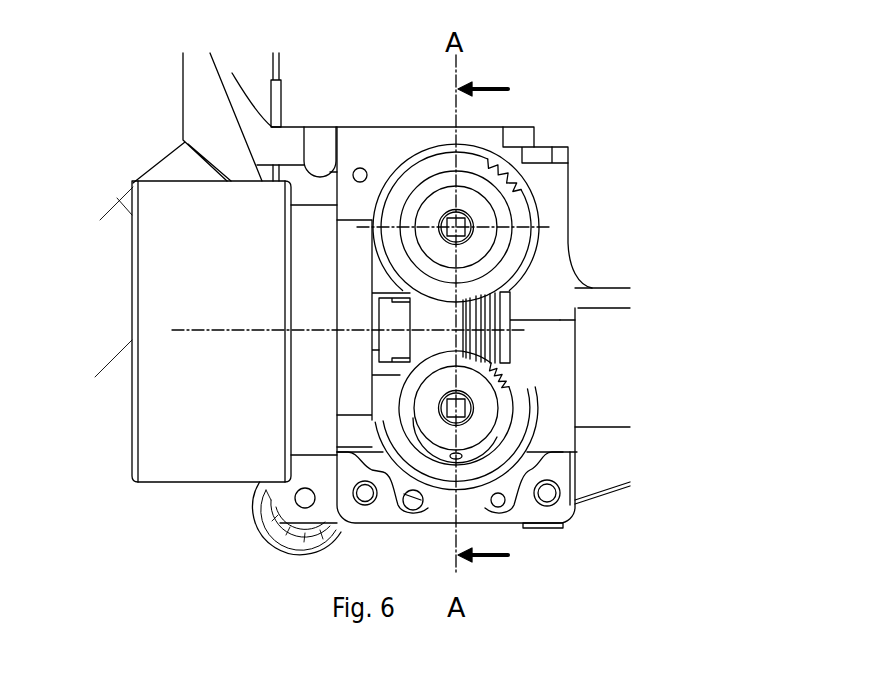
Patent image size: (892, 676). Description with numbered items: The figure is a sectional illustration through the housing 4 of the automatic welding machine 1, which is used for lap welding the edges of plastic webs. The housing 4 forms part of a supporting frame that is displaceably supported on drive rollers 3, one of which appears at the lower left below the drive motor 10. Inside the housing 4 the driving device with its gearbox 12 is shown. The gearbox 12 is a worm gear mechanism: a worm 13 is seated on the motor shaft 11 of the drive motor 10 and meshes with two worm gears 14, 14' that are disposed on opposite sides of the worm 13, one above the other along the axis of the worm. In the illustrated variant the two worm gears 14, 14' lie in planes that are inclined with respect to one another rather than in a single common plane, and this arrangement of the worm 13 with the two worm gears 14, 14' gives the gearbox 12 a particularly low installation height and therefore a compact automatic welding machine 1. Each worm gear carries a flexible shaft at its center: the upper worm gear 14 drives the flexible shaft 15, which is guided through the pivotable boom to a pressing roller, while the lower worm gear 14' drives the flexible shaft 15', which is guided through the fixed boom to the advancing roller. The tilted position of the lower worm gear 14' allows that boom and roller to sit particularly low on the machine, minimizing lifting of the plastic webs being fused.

The automatic welding machine 1 is at (612, 148).
The drive rollers 3 is at (270, 527).
The housing 4 is at (552, 238).
The drive motor 10 is at (238, 240).
The motor shaft 11 is at (372, 337).
The gearbox 12 is at (398, 163).
The worm 13 is at (482, 322).
The worm gear 14 is at (565, 289).
The flexible shaft 15 is at (585, 278).
The worm gear 14' is at (560, 420).
The flexible shaft 15' is at (592, 451).